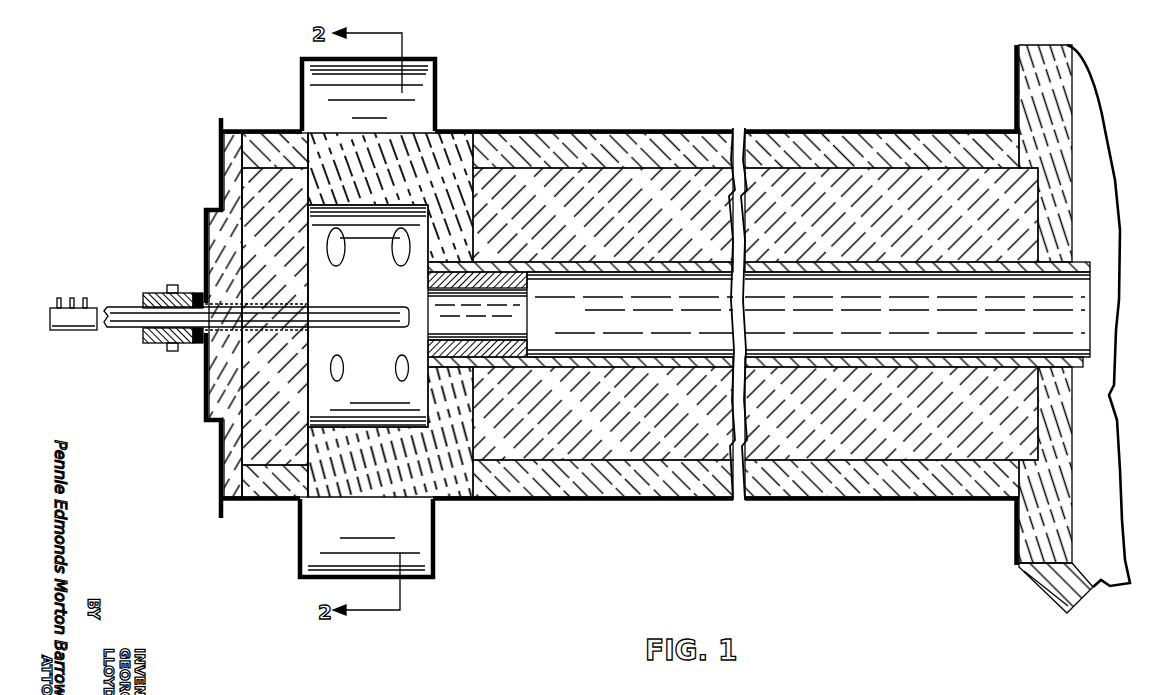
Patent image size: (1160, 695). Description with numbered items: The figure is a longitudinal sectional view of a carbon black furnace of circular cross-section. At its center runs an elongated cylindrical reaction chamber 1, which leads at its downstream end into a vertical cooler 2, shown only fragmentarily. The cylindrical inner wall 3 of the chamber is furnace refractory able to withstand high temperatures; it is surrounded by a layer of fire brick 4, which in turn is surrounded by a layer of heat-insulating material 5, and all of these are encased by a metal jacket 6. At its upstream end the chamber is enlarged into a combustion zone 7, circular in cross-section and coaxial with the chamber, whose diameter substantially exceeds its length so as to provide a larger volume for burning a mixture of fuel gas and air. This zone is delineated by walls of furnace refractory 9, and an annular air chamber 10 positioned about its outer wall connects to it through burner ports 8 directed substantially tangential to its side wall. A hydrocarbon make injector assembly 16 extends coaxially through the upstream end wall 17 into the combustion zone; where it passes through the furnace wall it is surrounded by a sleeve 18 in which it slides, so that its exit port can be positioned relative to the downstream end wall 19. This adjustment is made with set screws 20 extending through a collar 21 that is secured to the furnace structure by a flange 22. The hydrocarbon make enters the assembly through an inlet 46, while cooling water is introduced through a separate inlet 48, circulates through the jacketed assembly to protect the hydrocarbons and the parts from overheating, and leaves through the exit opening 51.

The reaction chamber 1 is at (1077, 337).
The vertical cooler 2 is at (1102, 302).
The cylindrical inner wall 3 is at (1090, 266).
The layer of fire brick 4 is at (1027, 204).
The layer of heat-insulating material 5 is at (973, 142).
The metal jacket 6 is at (893, 138).
The combustion zone 7 is at (370, 353).
The burner ports 8 is at (394, 259).
The furnace refractory 9 is at (458, 150).
The annular air chamber 10 is at (410, 94).
The hydrocarbon make injector assembly 16 is at (406, 306).
The upstream end wall 17 is at (311, 411).
The sleeve 18 is at (298, 303).
The downstream end wall 19 is at (424, 408).
The set screws 20 is at (173, 286).
The collar 21 is at (152, 296).
The flange 22 is at (180, 345).
The inlet 46 is at (59, 298).
The inlet 48 is at (72, 298).
The exit opening 51 is at (92, 288).